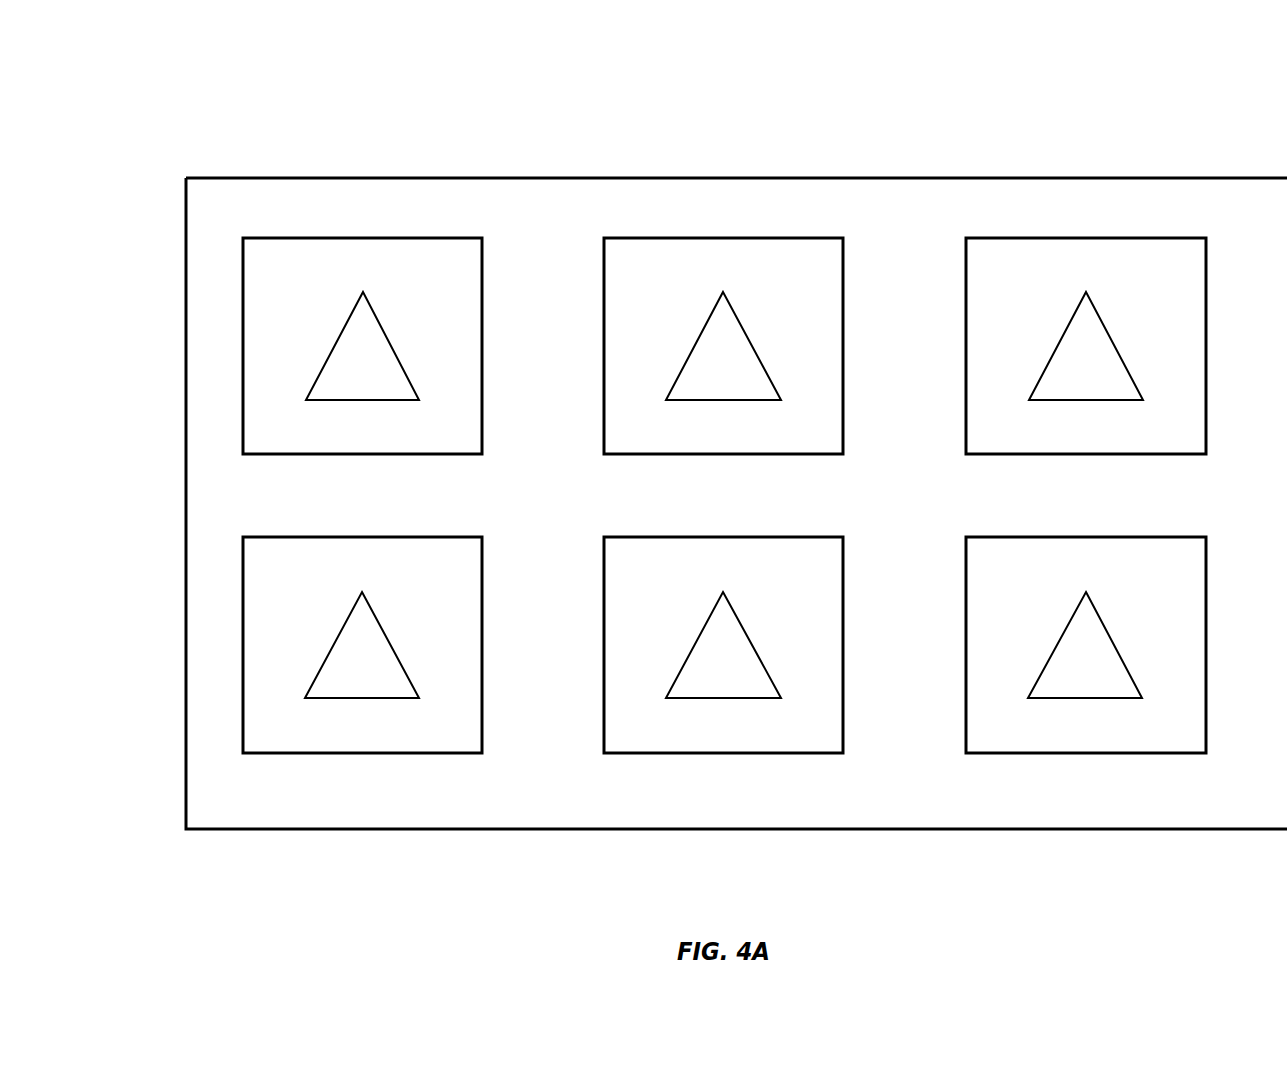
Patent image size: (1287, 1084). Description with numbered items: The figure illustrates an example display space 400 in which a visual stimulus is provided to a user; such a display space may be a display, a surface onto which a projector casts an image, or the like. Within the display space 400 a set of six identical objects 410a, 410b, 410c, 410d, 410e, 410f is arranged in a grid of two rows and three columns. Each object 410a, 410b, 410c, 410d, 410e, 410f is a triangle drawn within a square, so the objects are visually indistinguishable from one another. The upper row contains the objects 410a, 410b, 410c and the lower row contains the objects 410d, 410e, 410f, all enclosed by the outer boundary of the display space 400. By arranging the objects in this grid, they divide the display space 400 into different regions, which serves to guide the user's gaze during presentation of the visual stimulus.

The display space 400 is at (222, 123).
The object 410a is at (253, 247).
The object 410b is at (631, 237).
The object 410c is at (976, 238).
The object 410d is at (256, 537).
The object 410e is at (623, 535).
The object 410f is at (979, 532).